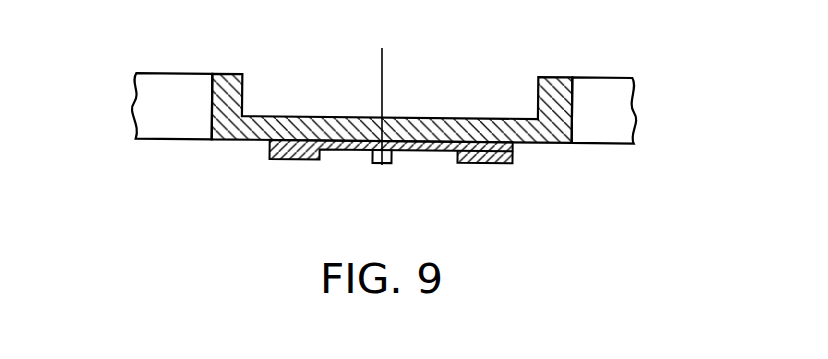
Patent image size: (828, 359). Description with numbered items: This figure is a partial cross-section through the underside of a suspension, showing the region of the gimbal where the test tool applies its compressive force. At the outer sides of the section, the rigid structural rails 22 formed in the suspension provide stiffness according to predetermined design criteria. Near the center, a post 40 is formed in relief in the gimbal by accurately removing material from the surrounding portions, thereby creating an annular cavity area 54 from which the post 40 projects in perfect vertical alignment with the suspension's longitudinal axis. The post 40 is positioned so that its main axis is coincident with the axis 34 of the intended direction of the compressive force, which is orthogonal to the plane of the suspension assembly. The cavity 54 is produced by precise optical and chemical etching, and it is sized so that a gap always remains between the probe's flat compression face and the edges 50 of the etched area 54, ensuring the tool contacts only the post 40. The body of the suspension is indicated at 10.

The structural rail 22 is at (172, 95).
The substrate 10 is at (238, 142).
The axis 34 is at (383, 108).
The annular cavity area 54 is at (345, 150).
The post 40 is at (381, 165).
The edges of the etched area 50 is at (456, 163).